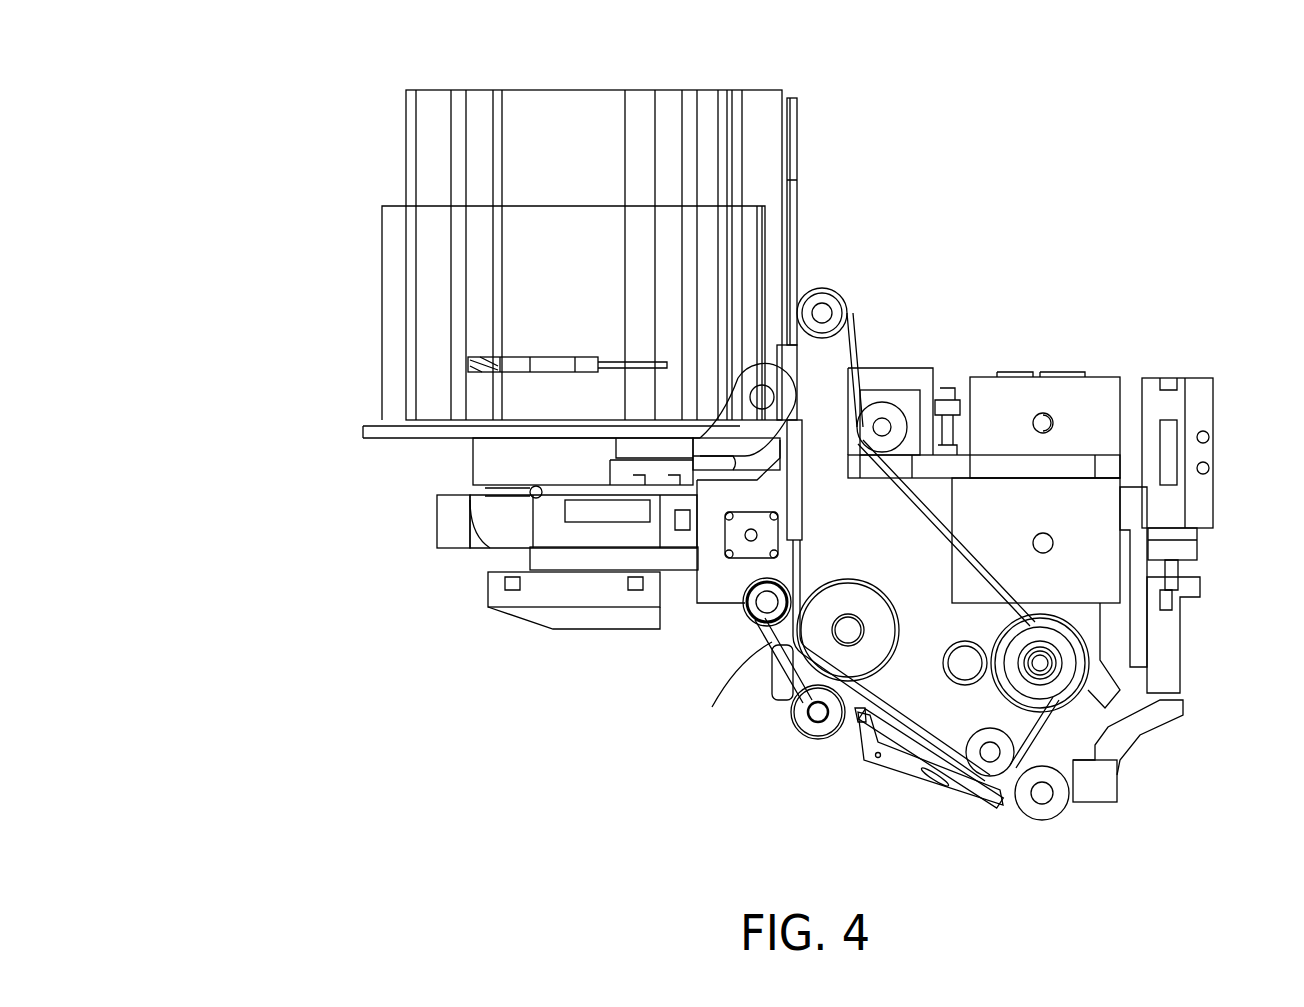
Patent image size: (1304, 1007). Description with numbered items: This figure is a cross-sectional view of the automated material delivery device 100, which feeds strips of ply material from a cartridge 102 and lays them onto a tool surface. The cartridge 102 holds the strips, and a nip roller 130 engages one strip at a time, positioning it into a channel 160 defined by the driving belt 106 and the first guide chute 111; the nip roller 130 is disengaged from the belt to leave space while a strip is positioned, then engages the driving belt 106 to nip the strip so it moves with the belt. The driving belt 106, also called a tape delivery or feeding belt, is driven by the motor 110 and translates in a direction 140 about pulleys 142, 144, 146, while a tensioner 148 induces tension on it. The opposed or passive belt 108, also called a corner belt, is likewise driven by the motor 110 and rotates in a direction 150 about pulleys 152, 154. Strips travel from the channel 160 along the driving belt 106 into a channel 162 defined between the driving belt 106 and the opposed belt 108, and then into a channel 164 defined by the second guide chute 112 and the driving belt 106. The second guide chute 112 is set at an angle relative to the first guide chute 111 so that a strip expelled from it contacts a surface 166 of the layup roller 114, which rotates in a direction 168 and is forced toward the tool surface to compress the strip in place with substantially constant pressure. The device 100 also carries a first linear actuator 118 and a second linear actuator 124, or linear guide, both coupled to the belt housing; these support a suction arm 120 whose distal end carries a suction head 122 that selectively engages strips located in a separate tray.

The automated material delivery device 100 is at (403, 70).
The cartridge 102 is at (412, 128).
The driving belt 106 is at (1078, 758).
The passive belt 108 is at (806, 667).
The motor 110 is at (1060, 673).
The first guide chute 111 is at (778, 455).
The second guide chute 112 is at (918, 748).
The layup roller 114 is at (1035, 812).
The first linear actuator 118 is at (1200, 385).
The suction arm 120 is at (1165, 630).
The suction head 122 is at (1112, 802).
The second linear actuator 124 is at (1135, 607).
The nip roller 130 is at (747, 347).
The direction 140 is at (832, 267).
The pulley 142 is at (833, 309).
The pulley 144 is at (822, 636).
The pulley 146 is at (985, 768).
The tensioner 148 is at (900, 430).
The direction 150 is at (812, 768).
The pulley 152 is at (813, 725).
The pulley 154 is at (752, 612).
The channel 160 is at (790, 447).
The channel 162 is at (798, 687).
The channel 164 is at (872, 717).
The surface 166 is at (1016, 811).
The direction 168 is at (1086, 824).